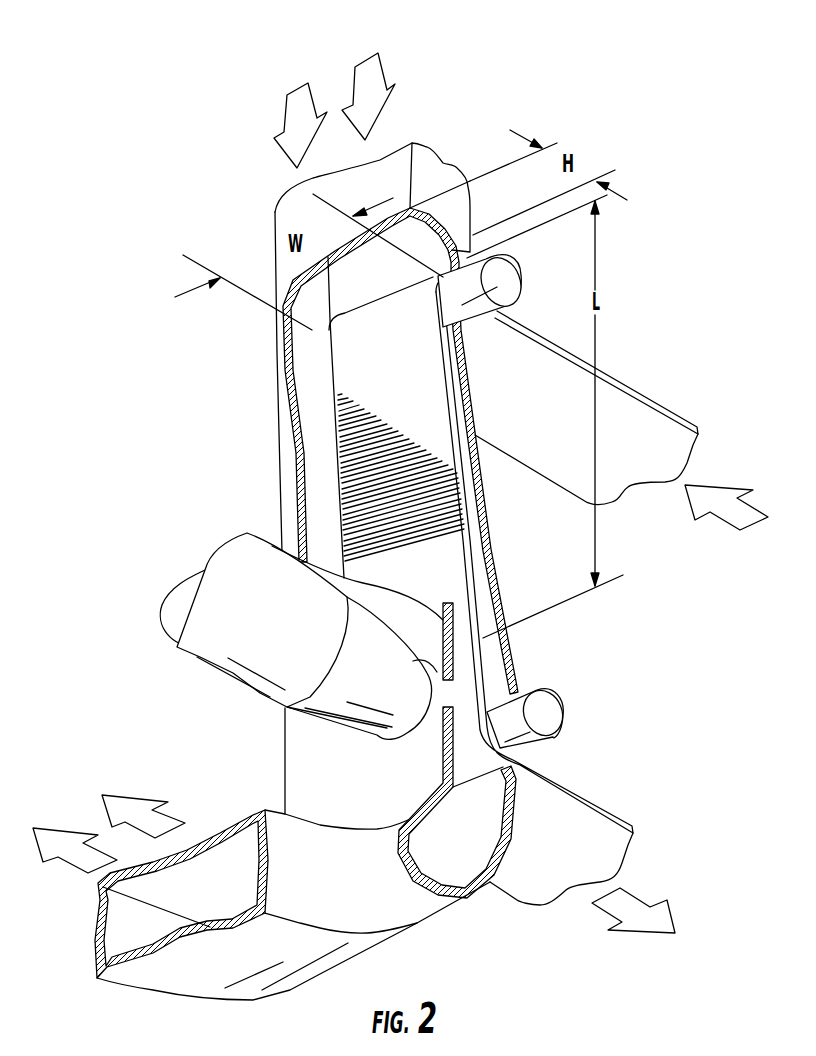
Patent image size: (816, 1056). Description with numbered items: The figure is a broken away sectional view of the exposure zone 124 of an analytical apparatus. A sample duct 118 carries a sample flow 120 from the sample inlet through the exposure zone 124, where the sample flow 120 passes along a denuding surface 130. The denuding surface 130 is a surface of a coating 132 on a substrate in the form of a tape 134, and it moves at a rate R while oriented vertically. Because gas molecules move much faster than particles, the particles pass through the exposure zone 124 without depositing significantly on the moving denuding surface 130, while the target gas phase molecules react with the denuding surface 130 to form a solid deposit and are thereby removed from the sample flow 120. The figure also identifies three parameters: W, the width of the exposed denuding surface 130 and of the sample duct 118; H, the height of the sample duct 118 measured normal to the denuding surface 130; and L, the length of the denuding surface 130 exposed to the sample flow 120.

The sample duct 118 is at (275, 232).
The sample flow 120 is at (380, 72).
The exposure zone 124 is at (250, 482).
The denuding surface 130 is at (350, 380).
The coating 132 is at (590, 823).
The tape 134 is at (625, 412).